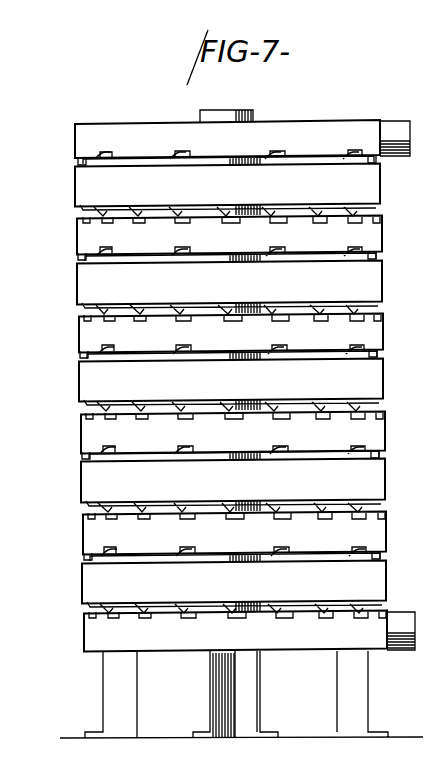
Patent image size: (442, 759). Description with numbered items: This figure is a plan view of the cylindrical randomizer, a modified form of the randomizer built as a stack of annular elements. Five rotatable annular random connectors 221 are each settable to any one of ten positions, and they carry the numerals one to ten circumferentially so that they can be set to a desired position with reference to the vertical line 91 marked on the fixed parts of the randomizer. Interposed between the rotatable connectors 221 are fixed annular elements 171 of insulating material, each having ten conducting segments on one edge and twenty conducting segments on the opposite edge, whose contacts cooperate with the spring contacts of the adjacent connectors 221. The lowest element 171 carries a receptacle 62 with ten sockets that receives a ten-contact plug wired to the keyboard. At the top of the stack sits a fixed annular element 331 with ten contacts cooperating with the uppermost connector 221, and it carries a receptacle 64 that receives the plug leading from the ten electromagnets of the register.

The fixed annular element 331 is at (306, 131).
The receptacle 64 is at (393, 130).
The vertical line 91 is at (229, 154).
The annular random connector 221 is at (82, 187).
The fixed annular element 171 is at (85, 236).
The receptacle 62 is at (412, 651).